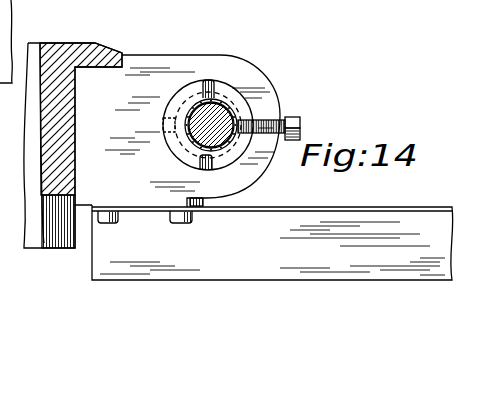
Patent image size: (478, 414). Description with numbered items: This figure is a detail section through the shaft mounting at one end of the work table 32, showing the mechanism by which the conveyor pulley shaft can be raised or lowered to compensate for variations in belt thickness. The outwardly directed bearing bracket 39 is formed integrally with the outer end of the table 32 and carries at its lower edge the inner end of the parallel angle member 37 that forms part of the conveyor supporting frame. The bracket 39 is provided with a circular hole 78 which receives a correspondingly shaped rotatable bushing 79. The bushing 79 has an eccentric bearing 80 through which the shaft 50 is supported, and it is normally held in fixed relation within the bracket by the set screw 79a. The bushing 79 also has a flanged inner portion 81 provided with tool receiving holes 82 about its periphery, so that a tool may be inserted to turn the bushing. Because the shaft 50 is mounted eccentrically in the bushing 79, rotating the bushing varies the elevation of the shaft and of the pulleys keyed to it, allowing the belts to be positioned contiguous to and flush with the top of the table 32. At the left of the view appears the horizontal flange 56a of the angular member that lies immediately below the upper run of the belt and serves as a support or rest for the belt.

The horizontal flange 56a is at (23, 0).
The table 32 is at (101, 51).
The bearing bracket 39 is at (170, 63).
The flanged inner portion 81 is at (229, 92).
The rotatable bushing 79 is at (176, 105).
The eccentric bearing 80 is at (250, 100).
The shaft 50 is at (203, 130).
The tool receiving hole 82 is at (209, 80).
The circular hole 78 is at (190, 160).
The set screw 79a is at (300, 122).
The angle member 37 is at (387, 195).